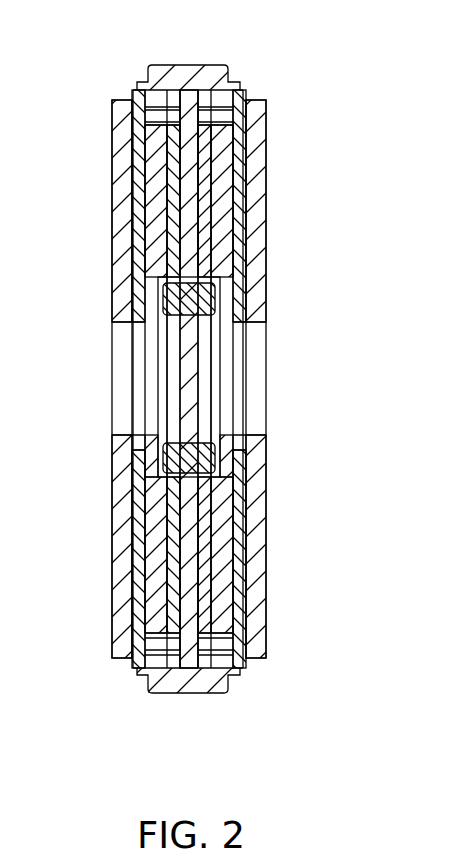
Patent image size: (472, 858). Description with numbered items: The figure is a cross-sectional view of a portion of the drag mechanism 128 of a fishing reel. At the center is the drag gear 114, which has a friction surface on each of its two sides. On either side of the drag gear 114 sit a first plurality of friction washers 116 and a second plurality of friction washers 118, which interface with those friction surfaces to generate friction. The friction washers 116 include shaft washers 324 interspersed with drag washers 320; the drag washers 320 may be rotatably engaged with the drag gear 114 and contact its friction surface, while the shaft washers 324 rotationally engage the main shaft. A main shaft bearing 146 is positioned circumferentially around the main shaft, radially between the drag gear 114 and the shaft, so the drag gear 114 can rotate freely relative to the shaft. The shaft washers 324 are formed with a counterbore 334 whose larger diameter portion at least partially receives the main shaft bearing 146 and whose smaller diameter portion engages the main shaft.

The drag gear 114 is at (185, 73).
The drag mechanism 128 is at (318, 94).
The first plurality of friction washers 116 is at (109, 210).
The second plurality of friction washers 118 is at (272, 207).
The counterbore 334 is at (163, 475).
The main shaft bearing 146 is at (200, 457).
The shaft washers 324 is at (155, 623).
The drag washers 320 is at (172, 608).